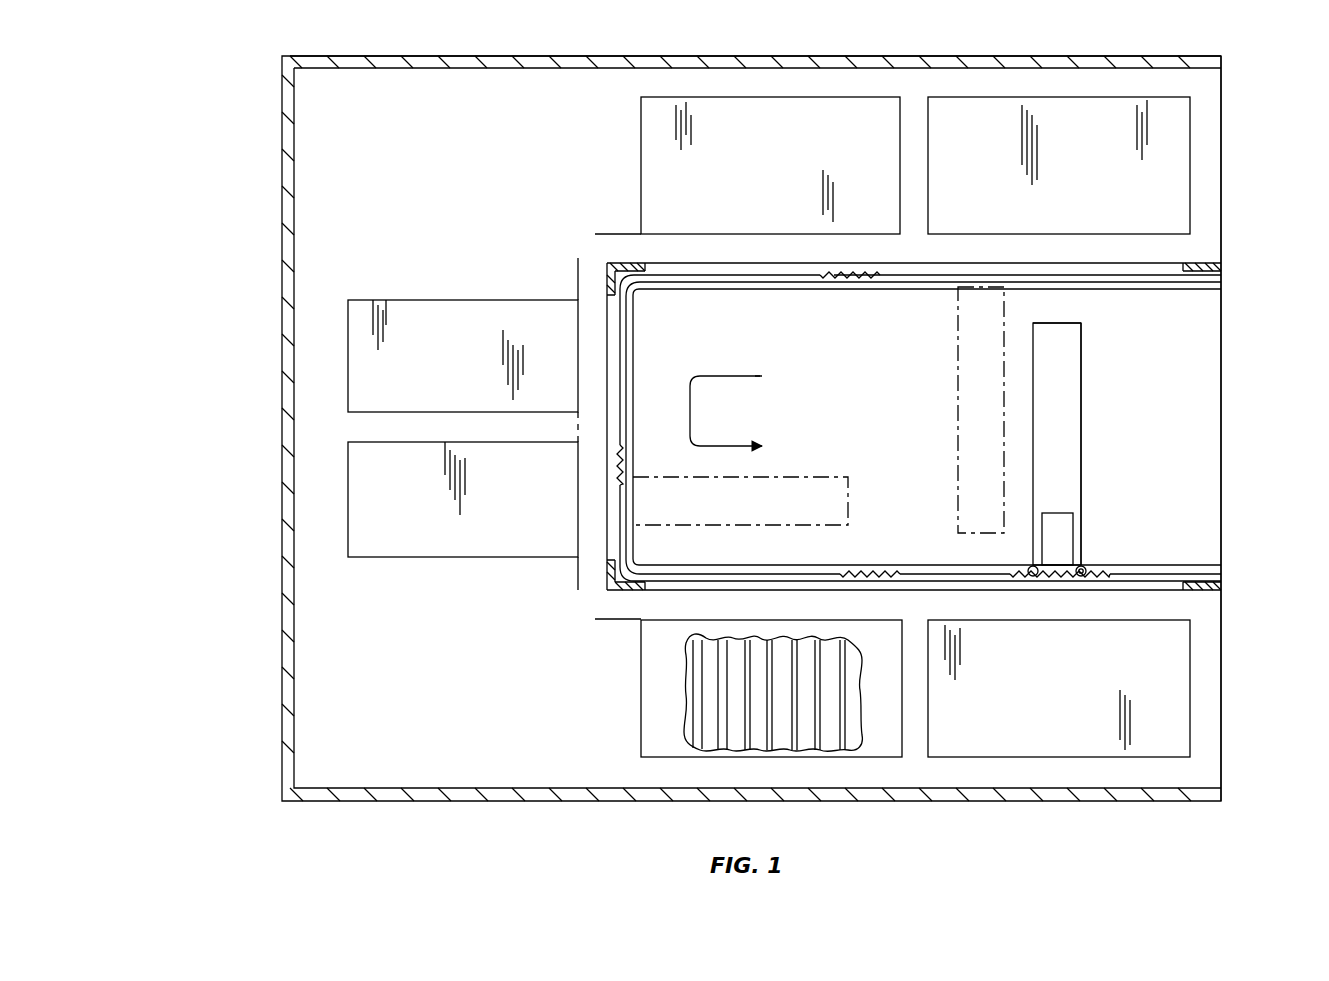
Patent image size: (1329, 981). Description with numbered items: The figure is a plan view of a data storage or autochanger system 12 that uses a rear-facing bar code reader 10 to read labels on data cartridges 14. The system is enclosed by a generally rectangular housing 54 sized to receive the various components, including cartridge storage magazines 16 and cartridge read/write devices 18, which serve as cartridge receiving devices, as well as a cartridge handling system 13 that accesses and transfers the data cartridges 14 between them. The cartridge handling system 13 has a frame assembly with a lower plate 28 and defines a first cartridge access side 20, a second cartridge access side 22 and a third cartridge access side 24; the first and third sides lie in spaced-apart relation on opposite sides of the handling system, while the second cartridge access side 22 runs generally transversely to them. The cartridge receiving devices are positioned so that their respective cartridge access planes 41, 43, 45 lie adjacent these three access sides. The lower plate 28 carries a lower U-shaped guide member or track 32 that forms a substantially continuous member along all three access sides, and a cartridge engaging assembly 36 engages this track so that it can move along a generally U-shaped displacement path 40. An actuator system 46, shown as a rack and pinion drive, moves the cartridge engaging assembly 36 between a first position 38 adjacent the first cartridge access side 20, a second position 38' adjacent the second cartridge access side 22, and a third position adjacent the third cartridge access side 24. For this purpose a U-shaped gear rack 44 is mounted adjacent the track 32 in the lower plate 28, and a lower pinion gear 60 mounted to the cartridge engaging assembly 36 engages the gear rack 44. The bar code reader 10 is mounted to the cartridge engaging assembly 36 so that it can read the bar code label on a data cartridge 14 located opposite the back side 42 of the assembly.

The rear-facing bar code reader 10 is at (1110, 461).
The data storage system 12 is at (245, 70).
The cartridge handling system 13 is at (1226, 353).
The data cartridges 14 is at (715, 718).
The cartridge storage magazines 16 is at (887, 97).
The cartridge read/write devices 18 is at (384, 442).
The first cartridge access side 20 is at (1170, 591).
The second cartridge access side 22 is at (606, 583).
The third cartridge access side 24 is at (1170, 263).
The lower plate 28 is at (842, 389).
The lower U-shaped guide member or track 32 is at (633, 338).
The cartridge engaging assembly 36 is at (1086, 432).
The first position 38 is at (1090, 444).
The second position 38' is at (755, 480).
The U-shaped displacement path 40 is at (690, 410).
The cartridge access plane 41 is at (625, 619).
The back side 42 is at (1056, 323).
The cartridge access plane 43 is at (578, 268).
The U-shaped gear rack 44 is at (884, 572).
The cartridge access plane 45 is at (625, 234).
The actuator system 46 is at (990, 551).
The housing 54 is at (612, 54).
The lower pinion gear 60 is at (1086, 566).